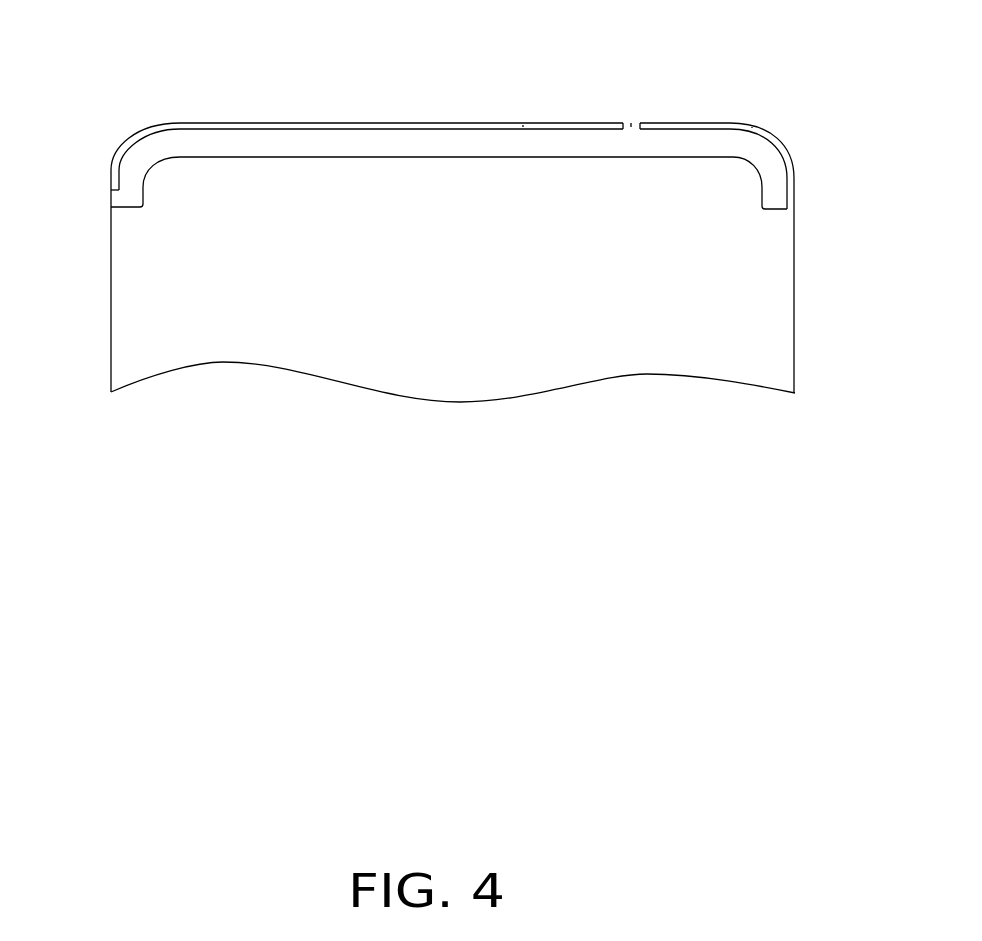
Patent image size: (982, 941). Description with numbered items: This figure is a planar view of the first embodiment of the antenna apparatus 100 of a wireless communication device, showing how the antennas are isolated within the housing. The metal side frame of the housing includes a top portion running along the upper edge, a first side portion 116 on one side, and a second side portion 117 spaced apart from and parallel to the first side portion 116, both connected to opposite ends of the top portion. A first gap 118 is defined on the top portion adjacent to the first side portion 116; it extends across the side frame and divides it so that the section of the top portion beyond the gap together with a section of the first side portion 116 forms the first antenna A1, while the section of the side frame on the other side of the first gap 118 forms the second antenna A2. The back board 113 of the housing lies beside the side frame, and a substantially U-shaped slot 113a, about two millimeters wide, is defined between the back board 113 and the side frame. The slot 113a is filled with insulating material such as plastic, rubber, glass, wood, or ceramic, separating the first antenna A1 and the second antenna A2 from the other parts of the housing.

The antenna apparatus 100 is at (437, 21).
The second side portion 117 is at (357, 122).
The first gap 118 is at (633, 125).
The second antenna A2 is at (523, 125).
The first antenna A1 is at (752, 128).
The slot 113a is at (755, 150).
The first side portion 116 is at (797, 222).
The back board 113 is at (220, 233).